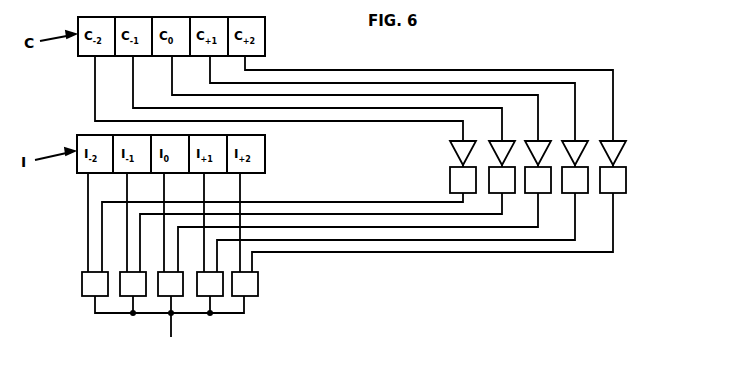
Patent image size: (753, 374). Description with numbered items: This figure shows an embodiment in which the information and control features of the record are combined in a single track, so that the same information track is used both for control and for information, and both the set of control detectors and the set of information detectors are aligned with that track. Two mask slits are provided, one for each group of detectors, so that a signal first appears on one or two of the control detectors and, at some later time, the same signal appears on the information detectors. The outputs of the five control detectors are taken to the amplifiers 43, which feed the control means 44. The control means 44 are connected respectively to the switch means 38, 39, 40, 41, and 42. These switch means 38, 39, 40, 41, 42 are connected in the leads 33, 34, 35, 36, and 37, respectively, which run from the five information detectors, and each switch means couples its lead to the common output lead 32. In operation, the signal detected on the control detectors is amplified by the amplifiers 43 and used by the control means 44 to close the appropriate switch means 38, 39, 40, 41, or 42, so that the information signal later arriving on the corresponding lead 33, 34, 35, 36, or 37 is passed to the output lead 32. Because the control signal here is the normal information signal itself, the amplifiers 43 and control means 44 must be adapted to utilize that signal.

The output lead 32 is at (173, 322).
The lead 33 is at (88, 182).
The lead 34 is at (127, 182).
The lead 35 is at (164, 182).
The lead 36 is at (204, 182).
The lead 37 is at (240, 182).
The switch means 38 is at (95, 284).
The switch means 39 is at (133, 284).
The switch means 40 is at (170, 284).
The switch means 41 is at (210, 284).
The switch means 42 is at (245, 284).
The amplifiers 43 is at (627, 155).
The control means 44 is at (627, 184).